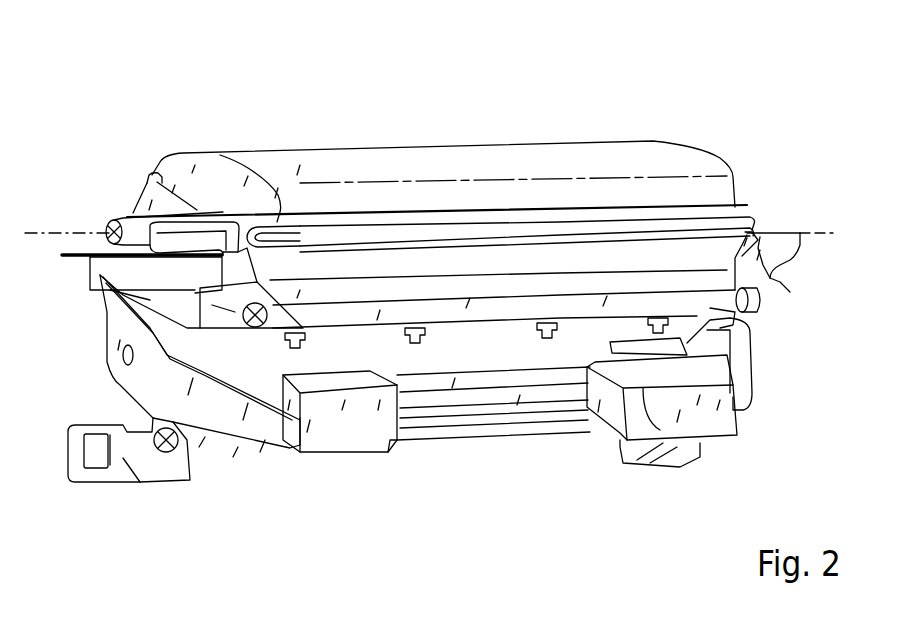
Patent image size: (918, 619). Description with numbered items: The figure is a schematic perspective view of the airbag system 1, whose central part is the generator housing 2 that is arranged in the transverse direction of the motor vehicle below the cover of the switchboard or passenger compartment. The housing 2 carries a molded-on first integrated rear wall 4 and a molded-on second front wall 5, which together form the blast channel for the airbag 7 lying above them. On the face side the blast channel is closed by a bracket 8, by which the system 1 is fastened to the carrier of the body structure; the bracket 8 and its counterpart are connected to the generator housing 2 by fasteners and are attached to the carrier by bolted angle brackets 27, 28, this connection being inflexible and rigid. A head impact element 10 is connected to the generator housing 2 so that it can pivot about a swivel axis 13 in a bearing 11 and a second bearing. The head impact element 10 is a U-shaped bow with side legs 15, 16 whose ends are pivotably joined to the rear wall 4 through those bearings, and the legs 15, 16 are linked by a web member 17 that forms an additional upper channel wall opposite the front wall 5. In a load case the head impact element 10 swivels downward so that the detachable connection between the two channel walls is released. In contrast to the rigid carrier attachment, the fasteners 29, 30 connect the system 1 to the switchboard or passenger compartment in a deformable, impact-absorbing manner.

The airbag system 1 is at (718, 115).
The generator housing 2 is at (442, 448).
The first integrated rear wall 4 is at (157, 170).
The second front wall 5 is at (547, 363).
The airbag 7 is at (592, 157).
The bracket 8 is at (148, 195).
The head impact element 10 is at (682, 252).
The bearing 11 is at (110, 227).
The swivel axis 13 is at (42, 238).
The side leg 15 is at (208, 235).
The side leg 16 is at (752, 237).
The web member 17 is at (432, 282).
The angle bracket 27 is at (92, 483).
The angle bracket 28 is at (680, 463).
The fastener 29 is at (100, 277).
The fastener 30 is at (790, 292).